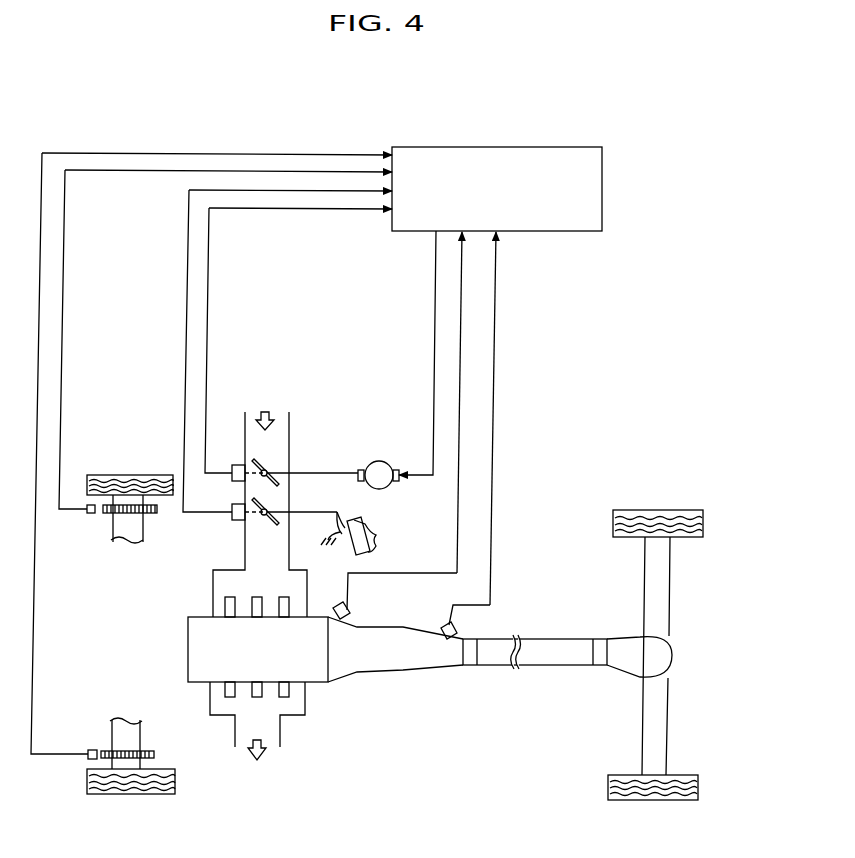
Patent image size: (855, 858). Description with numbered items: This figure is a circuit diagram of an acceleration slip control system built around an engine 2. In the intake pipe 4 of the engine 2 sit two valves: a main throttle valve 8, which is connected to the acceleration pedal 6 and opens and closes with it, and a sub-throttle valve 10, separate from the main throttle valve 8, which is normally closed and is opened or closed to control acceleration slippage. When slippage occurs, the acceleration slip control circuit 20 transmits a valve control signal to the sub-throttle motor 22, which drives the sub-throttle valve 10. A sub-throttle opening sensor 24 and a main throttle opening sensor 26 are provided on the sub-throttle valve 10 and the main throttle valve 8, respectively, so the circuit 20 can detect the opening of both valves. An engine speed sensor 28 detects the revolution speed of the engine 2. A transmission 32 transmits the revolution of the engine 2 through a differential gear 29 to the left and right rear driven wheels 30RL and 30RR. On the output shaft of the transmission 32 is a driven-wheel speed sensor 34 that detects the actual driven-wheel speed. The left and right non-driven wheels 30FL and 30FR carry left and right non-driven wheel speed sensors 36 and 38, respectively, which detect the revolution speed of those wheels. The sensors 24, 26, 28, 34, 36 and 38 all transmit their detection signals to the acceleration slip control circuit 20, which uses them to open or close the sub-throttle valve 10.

The engine 2 is at (322, 676).
The intake pipe 4 is at (244, 548).
The acceleration pedal 6 is at (345, 524).
The main throttle valve 8 is at (278, 526).
The sub-throttle valve 10 is at (275, 462).
The acceleration slip control circuit 20 is at (534, 146).
The sub-throttle motor 22 is at (384, 465).
The sub-throttle opening sensor 24 is at (232, 481).
The main throttle opening sensor 26 is at (232, 520).
The engine speed sensor 28 is at (347, 611).
The differential gear 29 is at (667, 655).
The right non-driven wheel 30FR is at (105, 478).
The left non-driven wheel 30FL is at (160, 792).
The right rear driven wheel 30RR is at (626, 512).
The left rear driven wheel 30RL is at (614, 792).
The transmission 32 is at (400, 673).
The driven-wheel speed sensor 34 is at (457, 632).
The left non-driven wheel speed sensor 36 is at (95, 743).
The right non-driven wheel speed sensor 38 is at (98, 518).